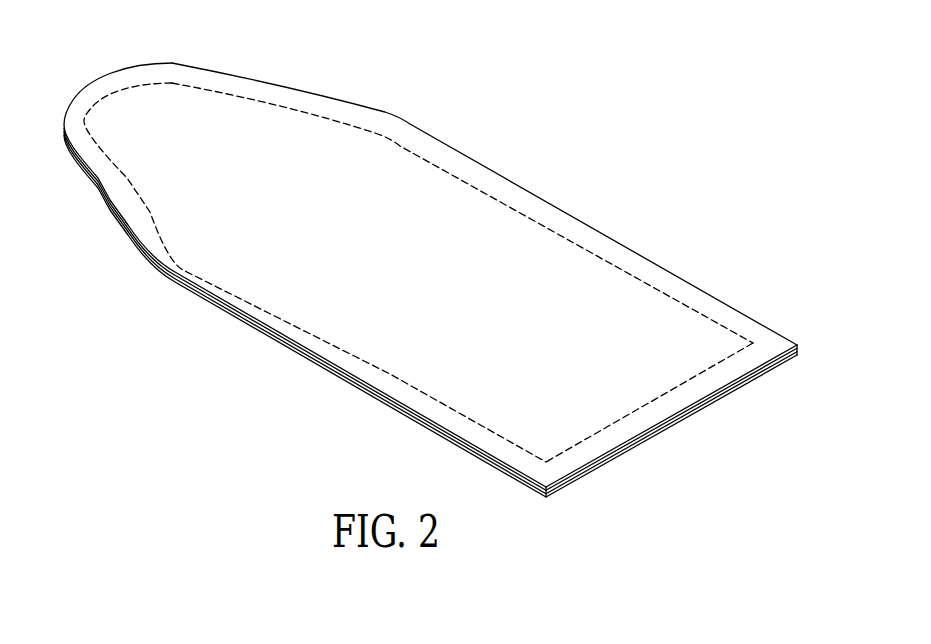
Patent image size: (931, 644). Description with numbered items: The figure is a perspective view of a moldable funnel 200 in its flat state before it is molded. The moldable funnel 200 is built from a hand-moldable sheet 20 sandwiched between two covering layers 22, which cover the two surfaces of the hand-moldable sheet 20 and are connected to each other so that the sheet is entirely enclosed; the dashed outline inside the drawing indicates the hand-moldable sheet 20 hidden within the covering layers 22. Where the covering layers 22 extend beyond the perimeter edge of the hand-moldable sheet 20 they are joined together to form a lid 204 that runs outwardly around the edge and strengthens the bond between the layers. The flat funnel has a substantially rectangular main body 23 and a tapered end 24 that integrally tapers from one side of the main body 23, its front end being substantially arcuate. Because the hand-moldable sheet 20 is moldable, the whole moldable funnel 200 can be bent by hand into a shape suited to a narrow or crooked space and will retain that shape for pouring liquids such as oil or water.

The moldable funnel 200 is at (541, 134).
The hand-moldable sheet 20 is at (688, 305).
The covering layers 22 is at (592, 233).
The main body 23 is at (495, 392).
The tapered end 24 is at (197, 142).
The lid 204 is at (655, 413).